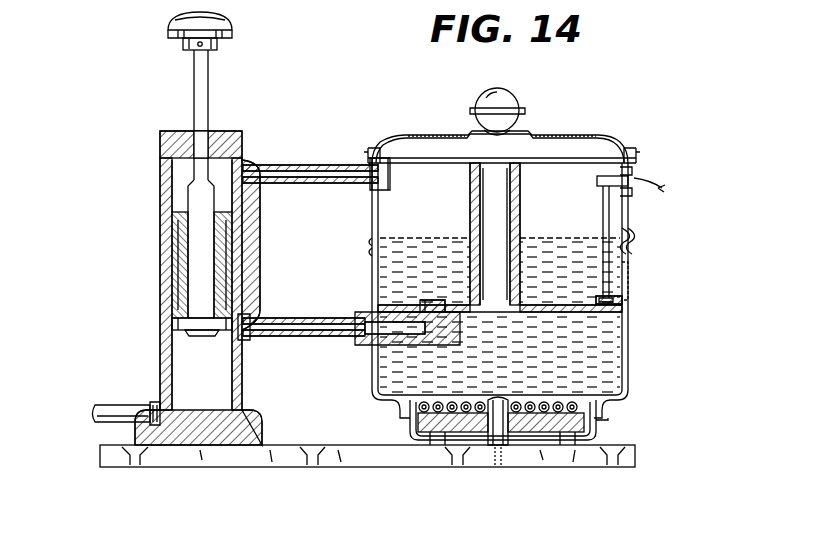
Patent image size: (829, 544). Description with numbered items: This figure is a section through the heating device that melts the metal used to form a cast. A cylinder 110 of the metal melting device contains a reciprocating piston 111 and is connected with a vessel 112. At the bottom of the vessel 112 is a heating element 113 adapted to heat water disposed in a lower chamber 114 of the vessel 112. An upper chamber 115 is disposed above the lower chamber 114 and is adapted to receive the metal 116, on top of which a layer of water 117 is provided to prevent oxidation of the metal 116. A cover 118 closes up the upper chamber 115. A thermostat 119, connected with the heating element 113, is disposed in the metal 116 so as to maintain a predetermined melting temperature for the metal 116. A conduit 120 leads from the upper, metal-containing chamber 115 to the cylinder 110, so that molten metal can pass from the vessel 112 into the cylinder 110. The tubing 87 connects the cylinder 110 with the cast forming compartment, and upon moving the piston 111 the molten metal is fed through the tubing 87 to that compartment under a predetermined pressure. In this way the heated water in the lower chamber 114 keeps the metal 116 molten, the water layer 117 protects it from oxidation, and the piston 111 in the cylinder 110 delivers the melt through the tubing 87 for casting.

The tubing 87 is at (118, 405).
The cylinder 110 is at (160, 370).
The reciprocating piston 111 is at (232, 262).
The vessel 112 is at (650, 354).
The heating element 113 is at (578, 418).
The lower chamber 114 is at (610, 374).
The upper chamber 115 is at (616, 212).
The metal 116 is at (626, 276).
The layer of water 117 is at (626, 254).
The cover 118 is at (567, 132).
The thermostat 119 is at (626, 298).
The conduit 120 is at (302, 348).